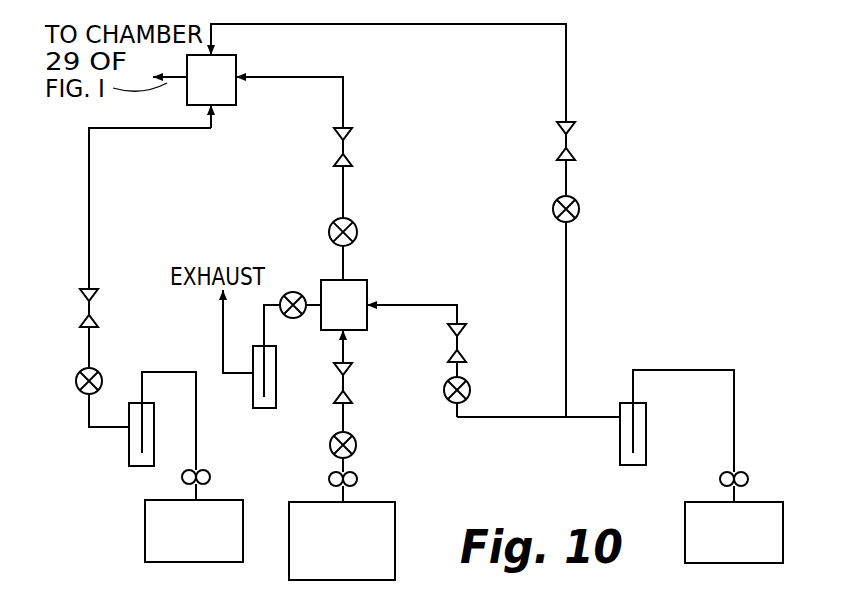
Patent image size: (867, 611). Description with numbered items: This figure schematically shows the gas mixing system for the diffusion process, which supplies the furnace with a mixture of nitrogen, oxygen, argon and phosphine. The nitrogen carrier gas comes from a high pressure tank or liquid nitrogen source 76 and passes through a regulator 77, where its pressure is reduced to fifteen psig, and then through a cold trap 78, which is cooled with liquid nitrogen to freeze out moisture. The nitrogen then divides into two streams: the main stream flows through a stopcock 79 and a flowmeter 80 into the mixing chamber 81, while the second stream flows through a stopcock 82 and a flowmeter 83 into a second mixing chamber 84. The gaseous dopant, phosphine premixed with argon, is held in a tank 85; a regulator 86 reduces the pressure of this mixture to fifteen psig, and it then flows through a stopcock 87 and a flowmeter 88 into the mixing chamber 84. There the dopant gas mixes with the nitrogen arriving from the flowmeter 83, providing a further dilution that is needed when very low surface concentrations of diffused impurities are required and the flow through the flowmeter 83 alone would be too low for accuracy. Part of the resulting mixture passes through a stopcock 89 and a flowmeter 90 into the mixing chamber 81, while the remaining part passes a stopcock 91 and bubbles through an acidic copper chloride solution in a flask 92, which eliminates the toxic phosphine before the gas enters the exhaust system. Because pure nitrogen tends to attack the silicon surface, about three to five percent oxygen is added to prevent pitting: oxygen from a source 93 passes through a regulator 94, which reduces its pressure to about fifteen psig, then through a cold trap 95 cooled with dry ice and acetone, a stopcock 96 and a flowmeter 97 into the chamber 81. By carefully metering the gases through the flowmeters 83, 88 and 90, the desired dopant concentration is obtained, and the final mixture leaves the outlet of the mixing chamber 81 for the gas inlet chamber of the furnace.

The liquid nitrogen source 76 is at (685, 522).
The regulator 77 is at (719, 479).
The cold trap 78 is at (619, 450).
The stopcock 79 is at (579, 210).
The flowmeter 80 is at (575, 141).
The mixing chamber 81 is at (236, 62).
The stopcock 82 is at (470, 390).
The flowmeter 83 is at (461, 343).
The mixing chamber 84 is at (367, 290).
The tank 85 is at (395, 525).
The regulator 86 is at (359, 479).
The stopcock 87 is at (357, 443).
The flowmeter 88 is at (345, 383).
The stopcock 89 is at (357, 231).
The flowmeter 90 is at (344, 146).
The stopcock 91 is at (290, 291).
The flask 92 is at (276, 380).
The oxygen source 93 is at (145, 522).
The regulator 94 is at (210, 475).
The cold trap 95 is at (129, 453).
The stopcock 96 is at (99, 371).
The flowmeter 97 is at (91, 304).